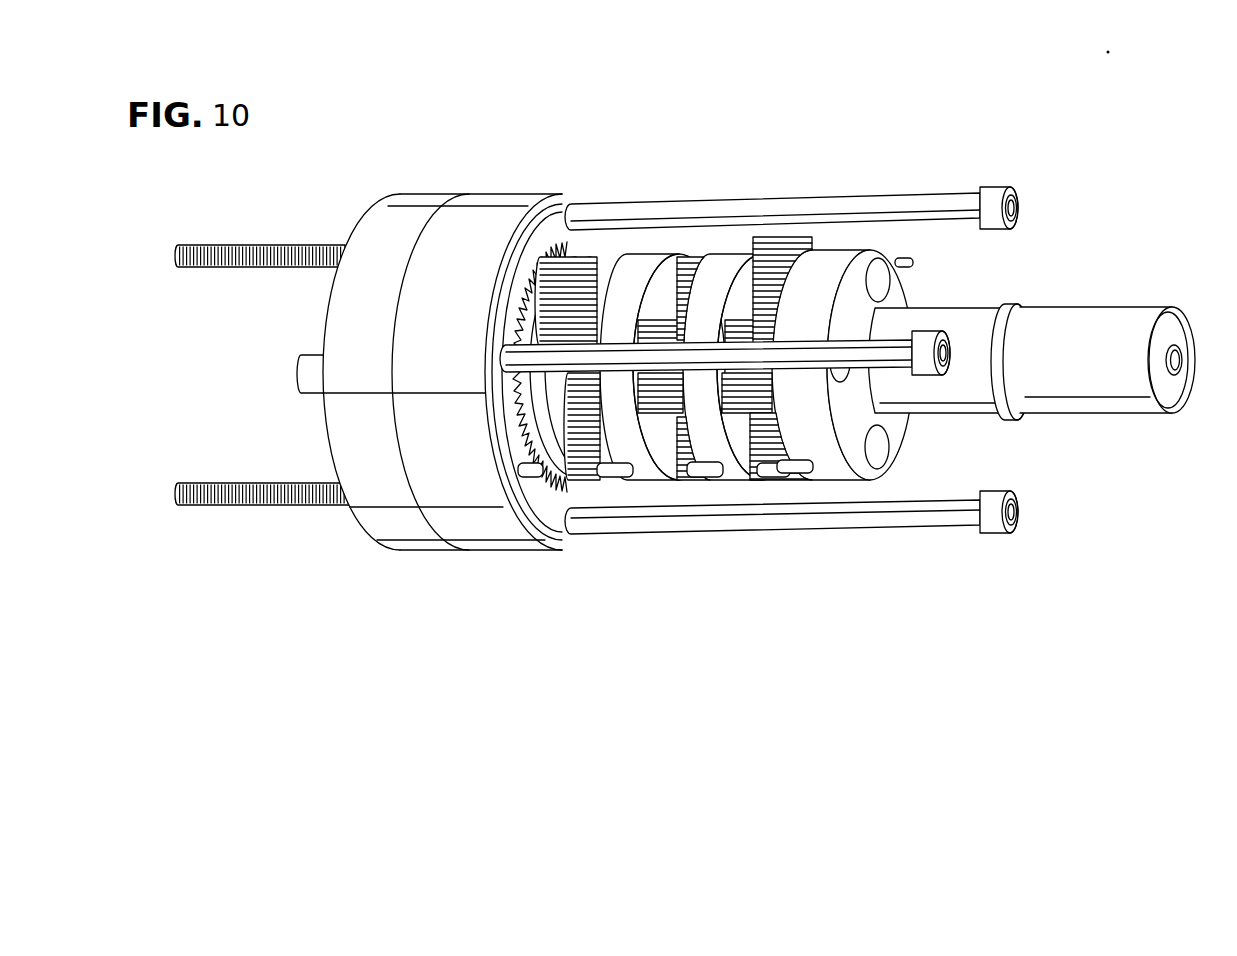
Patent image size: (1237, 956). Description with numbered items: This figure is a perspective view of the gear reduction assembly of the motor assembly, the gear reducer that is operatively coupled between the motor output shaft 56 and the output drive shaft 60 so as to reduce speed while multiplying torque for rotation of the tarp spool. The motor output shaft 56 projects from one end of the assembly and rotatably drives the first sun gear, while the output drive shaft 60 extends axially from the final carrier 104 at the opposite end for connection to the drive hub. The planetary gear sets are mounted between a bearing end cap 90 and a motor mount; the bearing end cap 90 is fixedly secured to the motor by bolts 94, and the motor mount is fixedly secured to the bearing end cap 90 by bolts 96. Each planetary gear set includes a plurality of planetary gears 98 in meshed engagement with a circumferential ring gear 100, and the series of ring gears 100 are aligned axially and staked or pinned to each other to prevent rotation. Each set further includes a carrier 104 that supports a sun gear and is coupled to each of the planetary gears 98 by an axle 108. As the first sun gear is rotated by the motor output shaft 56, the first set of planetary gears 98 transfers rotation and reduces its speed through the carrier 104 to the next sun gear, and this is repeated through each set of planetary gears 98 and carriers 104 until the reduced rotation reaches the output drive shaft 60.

The motor output shaft 56 is at (297, 370).
The output drive shaft 60 is at (1117, 315).
The bearing end cap 90 is at (400, 197).
The bolts 94 is at (197, 247).
The bolts 96 is at (913, 193).
The planetary gears 98 is at (578, 252).
The ring gear 100 is at (492, 200).
The carrier 104 is at (640, 263).
The axle 108 is at (880, 287).